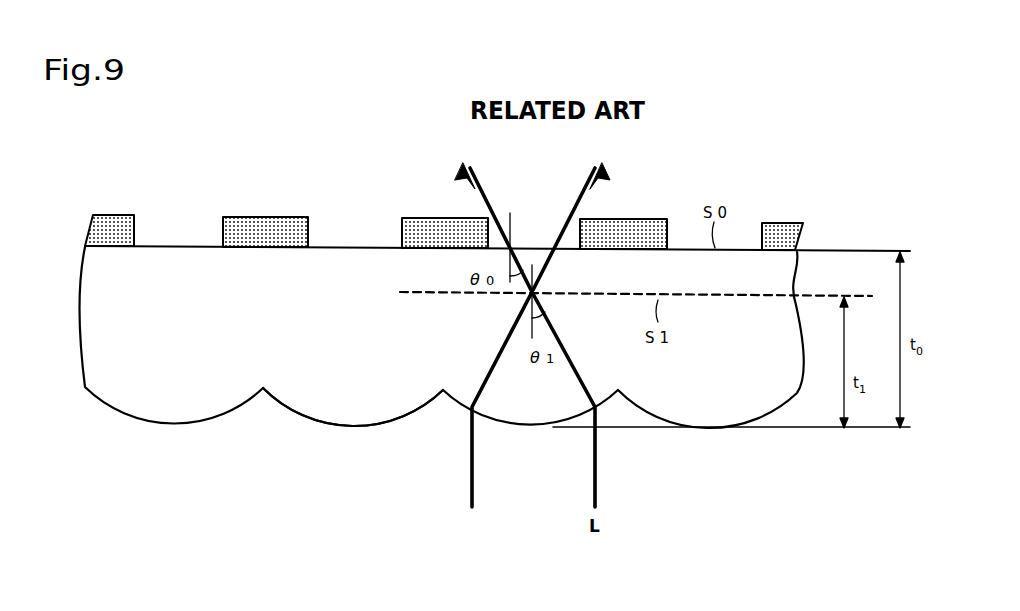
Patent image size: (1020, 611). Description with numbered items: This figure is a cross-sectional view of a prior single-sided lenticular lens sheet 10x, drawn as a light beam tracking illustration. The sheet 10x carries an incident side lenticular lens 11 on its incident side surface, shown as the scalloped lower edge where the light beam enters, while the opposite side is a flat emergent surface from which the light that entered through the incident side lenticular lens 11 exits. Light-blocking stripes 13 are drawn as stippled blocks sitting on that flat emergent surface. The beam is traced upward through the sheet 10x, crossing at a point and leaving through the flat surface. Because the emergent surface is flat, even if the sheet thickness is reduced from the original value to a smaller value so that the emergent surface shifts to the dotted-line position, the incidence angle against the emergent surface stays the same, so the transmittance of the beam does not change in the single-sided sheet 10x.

The single-sided lenticular lens sheet 10x is at (497, 588).
The pads / electrodes 13 is at (268, 216).
The incident side lenticular lens 11 is at (347, 425).